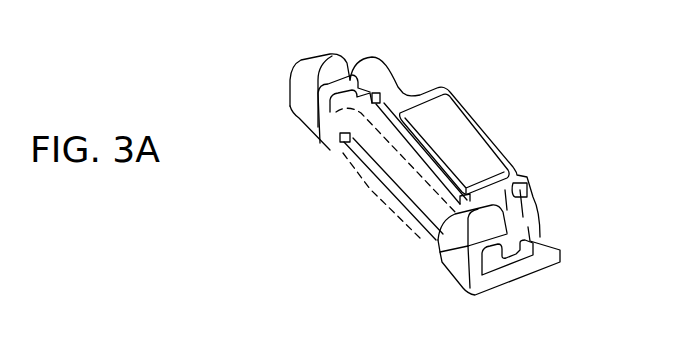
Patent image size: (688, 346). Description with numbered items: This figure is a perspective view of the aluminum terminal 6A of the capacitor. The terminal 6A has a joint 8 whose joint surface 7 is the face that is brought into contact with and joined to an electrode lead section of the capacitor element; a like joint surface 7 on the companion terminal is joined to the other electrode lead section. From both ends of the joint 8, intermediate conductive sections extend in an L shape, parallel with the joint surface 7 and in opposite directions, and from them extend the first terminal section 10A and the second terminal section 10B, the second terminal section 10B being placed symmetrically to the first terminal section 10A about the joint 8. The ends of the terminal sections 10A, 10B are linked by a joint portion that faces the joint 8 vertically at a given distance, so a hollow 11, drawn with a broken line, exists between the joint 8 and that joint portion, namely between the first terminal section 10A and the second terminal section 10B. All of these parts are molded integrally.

The terminal 6A is at (455, 92).
The joint surface 7 is at (473, 143).
The joint 8 is at (513, 177).
The first terminal section 10A is at (523, 270).
The second terminal section 10B is at (321, 66).
The hollow 11 is at (362, 181).